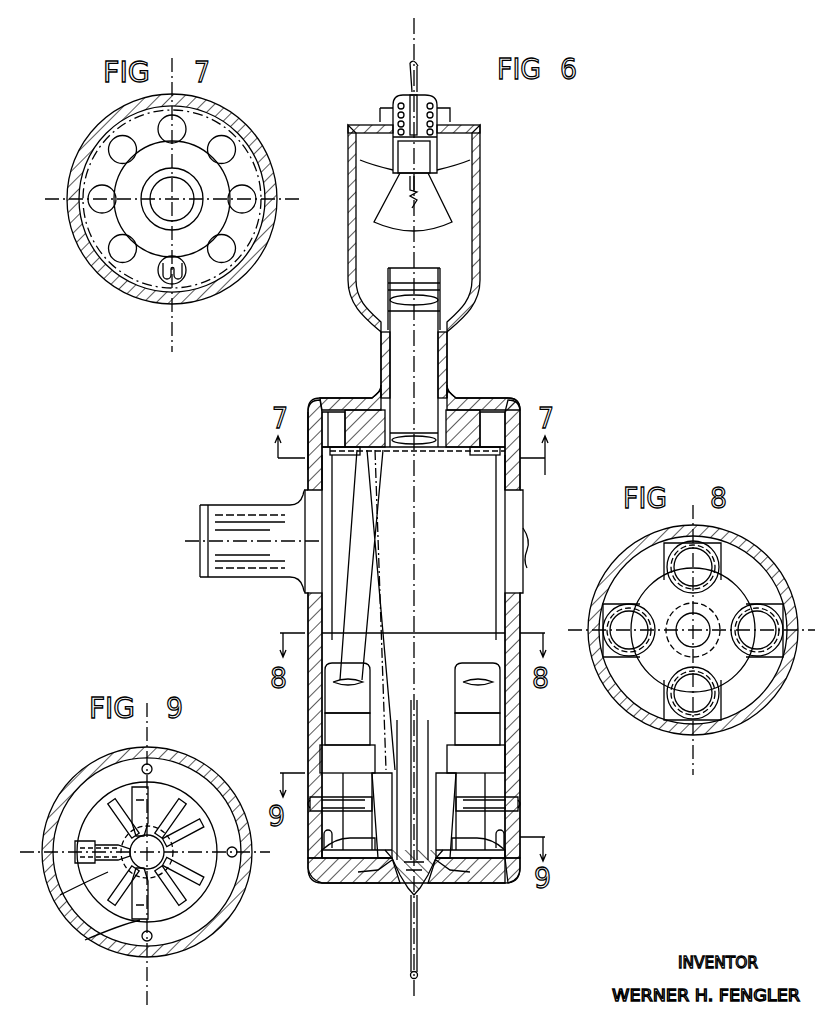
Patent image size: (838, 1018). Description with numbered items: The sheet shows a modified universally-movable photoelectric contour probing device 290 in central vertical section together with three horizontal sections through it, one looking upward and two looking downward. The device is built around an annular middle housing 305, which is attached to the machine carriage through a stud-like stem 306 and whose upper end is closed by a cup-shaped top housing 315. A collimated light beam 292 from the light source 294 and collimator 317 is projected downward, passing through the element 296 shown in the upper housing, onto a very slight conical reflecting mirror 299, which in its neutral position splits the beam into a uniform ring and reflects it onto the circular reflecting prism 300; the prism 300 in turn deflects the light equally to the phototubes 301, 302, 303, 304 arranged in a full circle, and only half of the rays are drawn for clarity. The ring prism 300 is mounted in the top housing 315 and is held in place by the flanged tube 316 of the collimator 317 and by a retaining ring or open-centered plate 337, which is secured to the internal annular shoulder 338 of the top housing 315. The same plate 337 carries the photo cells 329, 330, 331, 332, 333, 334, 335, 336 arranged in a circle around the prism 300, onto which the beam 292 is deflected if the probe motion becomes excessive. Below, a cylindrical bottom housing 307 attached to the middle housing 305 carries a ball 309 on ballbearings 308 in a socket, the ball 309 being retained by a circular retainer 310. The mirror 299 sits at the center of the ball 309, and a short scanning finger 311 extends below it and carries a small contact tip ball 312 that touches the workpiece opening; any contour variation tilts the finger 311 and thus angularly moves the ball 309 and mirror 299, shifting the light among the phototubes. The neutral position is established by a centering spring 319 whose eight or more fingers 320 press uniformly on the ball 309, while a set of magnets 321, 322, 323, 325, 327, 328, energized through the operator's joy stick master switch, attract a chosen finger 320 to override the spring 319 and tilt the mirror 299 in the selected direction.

In FIG. 6, the contour probing device 290 is at (386, 364).
In FIG. 7, the light beam 292 is at (175, 207).
In FIG. 6, the light beam 292 is at (414, 476).
In FIG. 8, the light beam 292 is at (695, 634).
In FIG. 6, the light source 294 is at (440, 215).
In FIG. 6, the condenser lens tube 296 is at (389, 278).
In FIG. 6, the conical reflecting mirror 299 is at (425, 888).
In FIG. 7, the circular reflecting prism 300 is at (152, 255).
In FIG. 6, the circular reflecting prism 300 is at (370, 437).
In FIG. 8, the circular reflecting prism 300 is at (692, 693).
In FIG. 6, the phototube 301 is at (352, 709).
In FIG. 8, the phototube 301 is at (600, 663).
In FIG. 8, the phototube 302 is at (716, 553).
In FIG. 6, the phototube 303 is at (483, 709).
In FIG. 8, the phototube 303 is at (762, 658).
In FIG. 8, the phototube 304 is at (698, 736).
In FIG. 6, the annular middle housing 305 is at (527, 552).
In FIG. 6, the stem 306 is at (276, 535).
In FIG. 6, the cylindrical bottom housing 307 is at (520, 758).
In FIG. 6, the ball bearings 308 is at (444, 882).
In FIG. 6, the ball 309 is at (400, 880).
In FIG. 6, the circular retainer 310 is at (458, 875).
In FIG. 6, the scanning finger 311 is at (417, 948).
In FIG. 6, the contact tip ball 312 is at (410, 975).
In FIG. 6, the cup-shaped top housing 315 is at (506, 398).
In FIG. 6, the flanged tube 316 is at (450, 380).
In FIG. 6, the collimator 317 is at (440, 280).
In FIG. 6, the centering spring 319 is at (378, 868).
In FIG. 9, the centering spring 319 is at (178, 925).
In FIG. 6, the fingers 320 is at (335, 405).
In FIG. 9, the fingers 320 is at (176, 902).
In FIG. 6, the magnet 321 is at (312, 870).
In FIG. 9, the magnet 321 is at (60, 896).
In FIG. 9, the magnet 322 is at (98, 803).
In FIG. 9, the magnet 323 is at (122, 760).
In FIG. 6, the magnet 325 is at (506, 862).
In FIG. 9, the magnet 327 is at (137, 938).
In FIG. 9, the magnet 328 is at (85, 938).
In FIG. 7, the photo cell 329 is at (92, 250).
In FIG. 7, the photo cell 330 is at (113, 140).
In FIG. 7, the photo cell 331 is at (190, 118).
In FIG. 7, the photo cell 332 is at (238, 128).
In FIG. 7, the photo cell 333 is at (258, 228).
In FIG. 6, the photo cell 333 is at (480, 456).
In FIG. 7, the photo cell 334 is at (228, 262).
In FIG. 7, the photo cell 335 is at (182, 284).
In FIG. 7, the photo cell 336 is at (122, 263).
In FIG. 6, the retaining ring 337 is at (516, 447).
In FIG. 6, the internal annular shoulder 338 is at (308, 415).